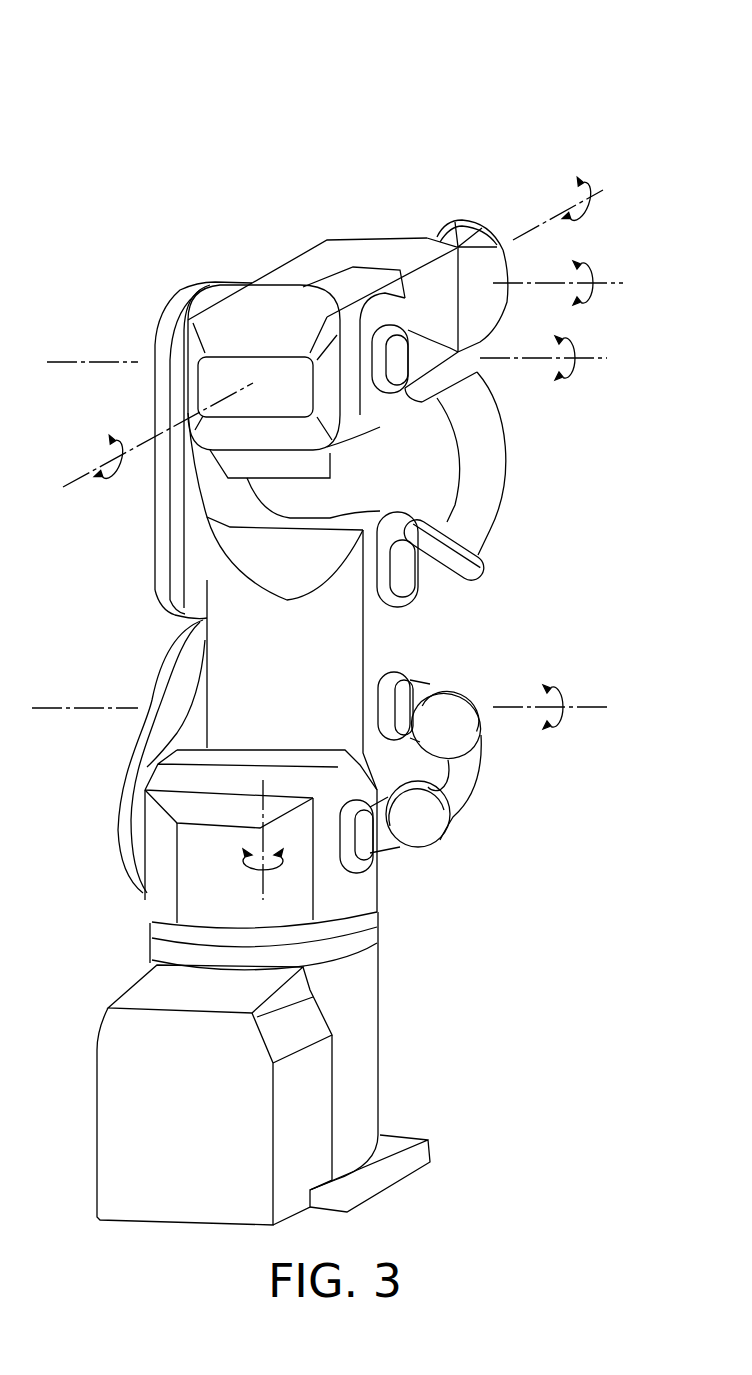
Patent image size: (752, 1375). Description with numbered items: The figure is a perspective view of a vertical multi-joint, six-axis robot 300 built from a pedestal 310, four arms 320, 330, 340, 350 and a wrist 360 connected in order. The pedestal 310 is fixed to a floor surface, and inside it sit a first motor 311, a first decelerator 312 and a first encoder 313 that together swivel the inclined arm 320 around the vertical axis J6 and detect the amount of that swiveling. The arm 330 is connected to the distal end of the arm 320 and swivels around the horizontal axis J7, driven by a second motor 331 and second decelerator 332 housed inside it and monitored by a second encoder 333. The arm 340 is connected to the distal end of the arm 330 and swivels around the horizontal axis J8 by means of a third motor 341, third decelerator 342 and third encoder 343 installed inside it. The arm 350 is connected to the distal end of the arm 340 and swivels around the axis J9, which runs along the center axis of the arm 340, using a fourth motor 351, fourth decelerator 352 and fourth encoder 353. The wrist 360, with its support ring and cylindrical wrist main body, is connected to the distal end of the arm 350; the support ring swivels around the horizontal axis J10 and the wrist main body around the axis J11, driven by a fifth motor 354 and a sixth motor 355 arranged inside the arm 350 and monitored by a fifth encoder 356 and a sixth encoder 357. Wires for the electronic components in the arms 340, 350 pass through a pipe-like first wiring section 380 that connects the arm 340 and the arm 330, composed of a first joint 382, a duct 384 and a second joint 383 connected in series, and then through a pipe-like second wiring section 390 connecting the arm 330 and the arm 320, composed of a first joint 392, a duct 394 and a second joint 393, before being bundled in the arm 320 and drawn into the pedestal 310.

The robot 300 is at (587, 93).
The pedestal 310 is at (347, 1010).
The first motor 311 is at (350, 978).
The first decelerator 312 is at (331, 1051).
The first encoder 313 is at (331, 1051).
The arm 320 is at (120, 825).
The arm 330 is at (180, 549).
The second motor 331 is at (180, 777).
The second decelerator 332 is at (209, 771).
The second encoder 333 is at (209, 771).
The arm 340 is at (333, 250).
The third motor 341 is at (237, 320).
The third decelerator 342 is at (273, 372).
The third encoder 343 is at (273, 378).
The arm 350 is at (445, 222).
The fourth motor 351 is at (464, 225).
The fourth decelerator 352 is at (490, 320).
The fourth encoder 353 is at (490, 333).
The fifth motor 354 is at (477, 300).
The sixth motor 355 is at (490, 365).
The fifth encoder 356 is at (490, 365).
The sixth encoder 357 is at (490, 365).
The wrist 360 is at (440, 222).
The first wiring section 380 is at (494, 535).
The first joint 382 is at (420, 582).
The second joint 383 is at (413, 402).
The duct 384 is at (484, 496).
The second wiring section 390 is at (500, 762).
The first joint 392 is at (383, 840).
The second joint 393 is at (420, 693).
The duct 394 is at (455, 783).
The axis J6 is at (263, 883).
The axis J7 is at (580, 703).
The axis J8 is at (593, 362).
The axis J9 is at (83, 478).
The axis J10 is at (607, 287).
The axis J11 is at (600, 200).